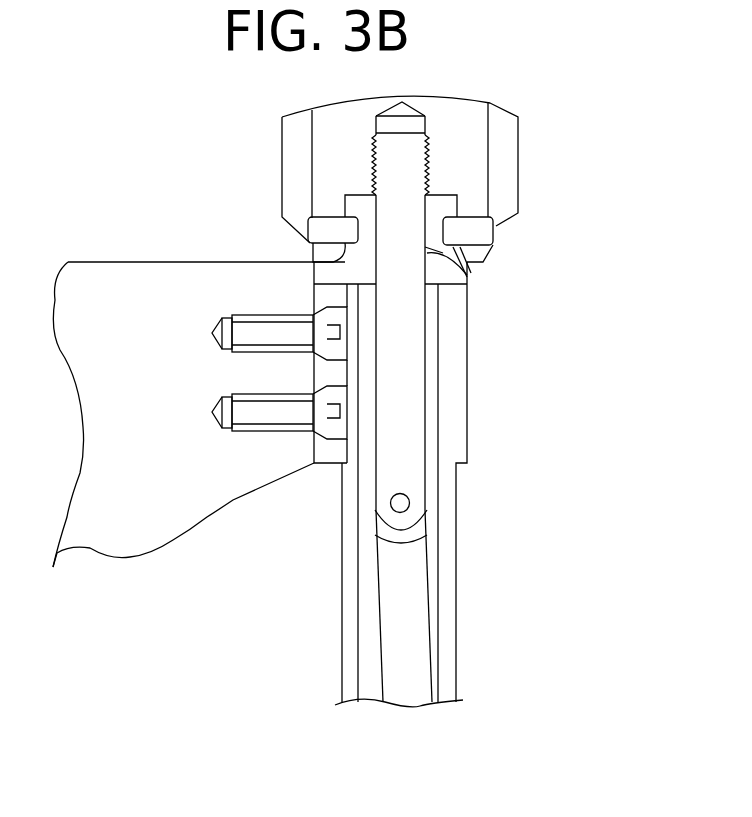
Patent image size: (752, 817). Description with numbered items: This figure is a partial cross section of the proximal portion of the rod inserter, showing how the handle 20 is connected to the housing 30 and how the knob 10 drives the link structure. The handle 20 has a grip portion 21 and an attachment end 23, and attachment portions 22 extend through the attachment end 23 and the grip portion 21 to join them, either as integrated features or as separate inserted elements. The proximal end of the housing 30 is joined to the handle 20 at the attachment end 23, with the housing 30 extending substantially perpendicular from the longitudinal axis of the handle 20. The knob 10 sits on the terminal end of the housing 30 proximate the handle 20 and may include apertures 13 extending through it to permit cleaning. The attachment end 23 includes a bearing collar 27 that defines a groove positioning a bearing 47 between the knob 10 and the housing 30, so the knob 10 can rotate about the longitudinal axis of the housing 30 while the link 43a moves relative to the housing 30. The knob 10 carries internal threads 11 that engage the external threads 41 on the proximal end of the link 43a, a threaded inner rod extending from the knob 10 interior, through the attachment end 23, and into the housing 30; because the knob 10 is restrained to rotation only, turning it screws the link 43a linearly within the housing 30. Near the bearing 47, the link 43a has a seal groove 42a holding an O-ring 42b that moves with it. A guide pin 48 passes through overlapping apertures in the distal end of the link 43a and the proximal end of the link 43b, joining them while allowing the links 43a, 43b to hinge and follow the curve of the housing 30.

The knob 10 is at (282, 138).
The threads 11 is at (413, 140).
The apertures 13 is at (467, 230).
The handle 20 is at (190, 268).
The grip portion 21 is at (117, 262).
The attachment portions 22 is at (257, 333).
The attachment end 23 is at (312, 280).
The bearing collar 27 is at (445, 207).
The housing 30 is at (457, 667).
The threads 41 is at (428, 152).
The seal groove 42a is at (466, 276).
The O-ring 42b is at (517, 268).
The link 43a is at (407, 357).
The link 43b is at (407, 580).
The bearing 47 is at (333, 225).
The guide pin 48 is at (410, 503).